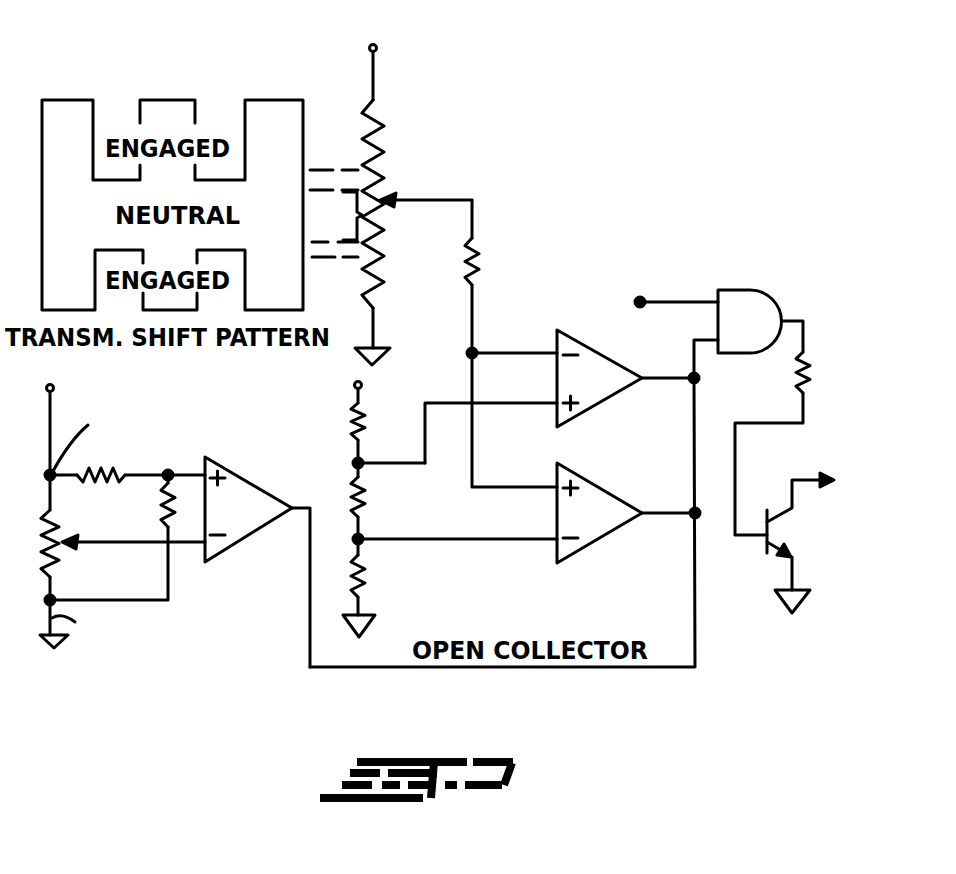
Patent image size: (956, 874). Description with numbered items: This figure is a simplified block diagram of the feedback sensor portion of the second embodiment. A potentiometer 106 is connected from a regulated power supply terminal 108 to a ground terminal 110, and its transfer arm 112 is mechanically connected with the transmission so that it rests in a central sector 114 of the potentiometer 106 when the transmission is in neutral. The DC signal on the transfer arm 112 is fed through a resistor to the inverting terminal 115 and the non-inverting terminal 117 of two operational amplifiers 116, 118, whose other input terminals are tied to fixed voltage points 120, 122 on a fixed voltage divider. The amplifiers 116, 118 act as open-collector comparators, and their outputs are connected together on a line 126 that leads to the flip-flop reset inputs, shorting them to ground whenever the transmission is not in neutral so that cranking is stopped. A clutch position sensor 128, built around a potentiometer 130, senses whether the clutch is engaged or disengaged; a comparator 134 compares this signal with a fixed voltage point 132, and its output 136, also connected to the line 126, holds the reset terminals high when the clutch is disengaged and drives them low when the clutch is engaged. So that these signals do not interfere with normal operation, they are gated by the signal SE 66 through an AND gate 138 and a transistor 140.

The signal SE 66 is at (685, 302).
The potentiometer 106 is at (415, 165).
The regulated power supply terminal 108 is at (369, 48).
The ground terminal 110 is at (375, 345).
The transfer arm 112 is at (450, 201).
The central sector 114 is at (335, 213).
The inverting terminal 115 is at (557, 344).
The operational amplifier 116 is at (595, 407).
The non-inverting terminal 117 is at (557, 480).
The operational amplifier 118 is at (600, 480).
The fixed voltage point 120 is at (360, 460).
The fixed voltage point 122 is at (360, 538).
The line 126 is at (692, 362).
The sensor 128 is at (66, 555).
The potentiometer 130 is at (66, 518).
The fixed voltage point 132 is at (192, 470).
The comparator 134 is at (258, 480).
The output 136 is at (310, 572).
The AND gate 138 is at (753, 353).
The transistor 140 is at (775, 550).